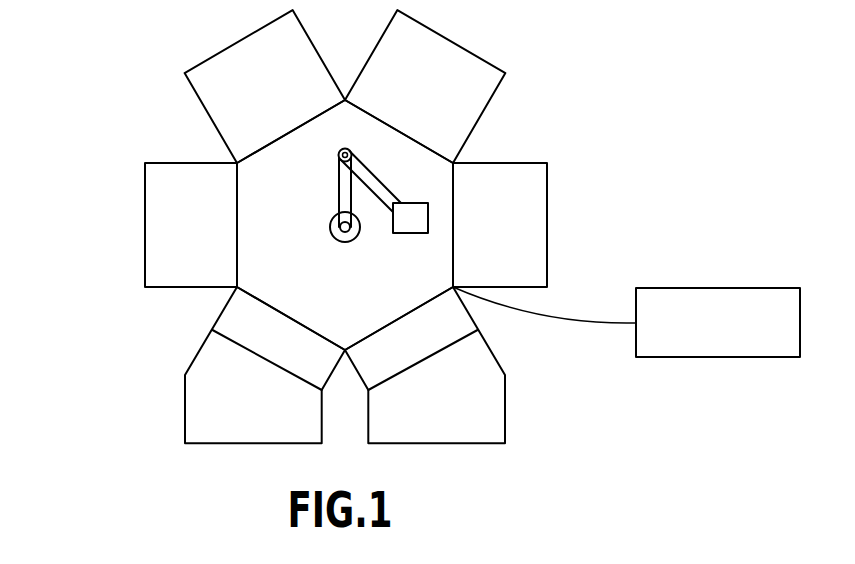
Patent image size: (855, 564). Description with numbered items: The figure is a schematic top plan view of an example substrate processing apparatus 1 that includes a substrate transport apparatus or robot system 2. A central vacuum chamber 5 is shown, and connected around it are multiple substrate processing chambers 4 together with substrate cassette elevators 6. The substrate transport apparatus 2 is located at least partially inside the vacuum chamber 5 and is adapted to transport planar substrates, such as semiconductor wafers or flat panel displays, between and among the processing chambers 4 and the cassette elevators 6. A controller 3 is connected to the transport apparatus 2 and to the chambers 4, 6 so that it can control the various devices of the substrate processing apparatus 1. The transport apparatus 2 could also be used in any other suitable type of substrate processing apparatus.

The substrate processing apparatus 1 is at (87, 307).
The substrate transport apparatus 2 is at (408, 203).
The controller 3 is at (722, 287).
The substrate processing chambers 4 is at (303, 28).
The vacuum chamber 5 is at (250, 267).
The substrate cassette elevators 6 is at (185, 400).